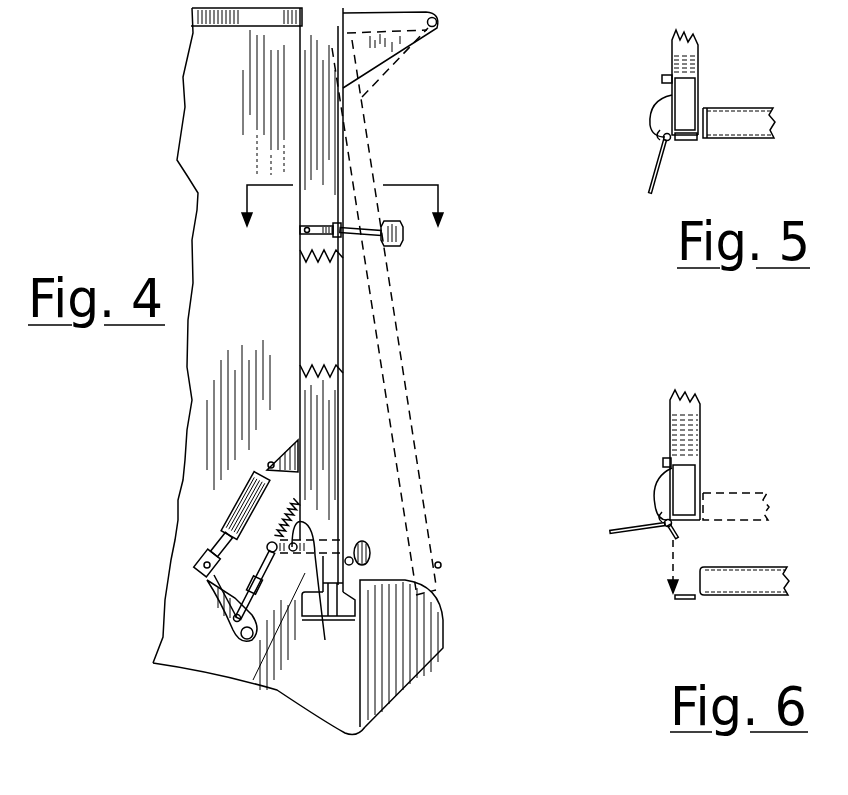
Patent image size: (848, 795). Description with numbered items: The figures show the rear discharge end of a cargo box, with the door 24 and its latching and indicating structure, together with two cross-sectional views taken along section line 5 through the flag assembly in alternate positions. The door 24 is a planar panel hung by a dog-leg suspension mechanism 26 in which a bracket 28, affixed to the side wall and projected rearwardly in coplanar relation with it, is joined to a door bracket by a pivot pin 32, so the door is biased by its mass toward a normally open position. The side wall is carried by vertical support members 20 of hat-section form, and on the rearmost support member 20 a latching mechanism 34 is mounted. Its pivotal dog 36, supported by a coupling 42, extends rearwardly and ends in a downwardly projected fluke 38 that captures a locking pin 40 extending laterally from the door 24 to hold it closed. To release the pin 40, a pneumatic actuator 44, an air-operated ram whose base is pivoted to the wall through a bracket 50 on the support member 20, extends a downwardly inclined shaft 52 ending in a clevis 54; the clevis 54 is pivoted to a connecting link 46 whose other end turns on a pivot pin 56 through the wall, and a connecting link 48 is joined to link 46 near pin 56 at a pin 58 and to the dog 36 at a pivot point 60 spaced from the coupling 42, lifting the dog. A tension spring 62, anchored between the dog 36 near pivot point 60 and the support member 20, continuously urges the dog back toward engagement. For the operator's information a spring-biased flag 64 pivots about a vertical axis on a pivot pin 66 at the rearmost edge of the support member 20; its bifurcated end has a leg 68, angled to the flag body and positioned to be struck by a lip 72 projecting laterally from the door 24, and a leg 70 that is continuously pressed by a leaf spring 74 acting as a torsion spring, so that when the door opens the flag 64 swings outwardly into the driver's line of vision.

In FIG. 4, the section line 5— 5 is at (341, 220).
In FIG. 4, the vertical support member 20 is at (327, 440).
In FIG. 5, the vertical support member 20 is at (672, 120).
In FIG. 6, the vertical support member 20 is at (681, 455).
In FIG. 4, the door 24 is at (405, 430).
In FIG. 5, the door 24 is at (747, 140).
In FIG. 6, the door 24 is at (753, 500).
In FIG. 4, the suspension mechanism 26 is at (470, 27).
In FIG. 4, the bracket 28 is at (380, 57).
In FIG. 4, the pivot pin 32 is at (435, 27).
In FIG. 4, the latching mechanism 34 is at (140, 490).
In FIG. 4, the pivotal dog 36 is at (345, 562).
In FIG. 4, the fluke 38 is at (388, 560).
In FIG. 4, the locking pin 40 is at (350, 568).
In FIG. 4, the coupling 42 is at (302, 560).
In FIG. 4, the pneumatic actuator 44 is at (243, 510).
In FIG. 4, the connecting link 46 is at (222, 603).
In FIG. 4, the connecting link 48 is at (233, 614).
In FIG. 4, the bracket 50 is at (283, 440).
In FIG. 4, the shaft 52 is at (220, 537).
In FIG. 4, the clevis 54 is at (200, 553).
In FIG. 4, the pivot pin 56 is at (245, 639).
In FIG. 4, the link pin 58 is at (236, 621).
In FIG. 4, the pivot point 60 is at (269, 553).
In FIG. 4, the tension spring 62 is at (293, 517).
In FIG. 4, the spring-biased flag 64 is at (393, 250).
In FIG. 5, the spring-biased flag 64 is at (657, 177).
In FIG. 6, the spring-biased flag 64 is at (618, 528).
In FIG. 4, the pivot pin 66 is at (341, 229).
In FIG. 5, the pivot pin 66 is at (668, 141).
In FIG. 6, the pivot pin 66 is at (662, 525).
In FIG. 6, the leg 68 is at (670, 533).
In FIG. 5, the leg 70 is at (657, 140).
In FIG. 6, the leg 70 is at (663, 517).
In FIG. 5, the lip 72 is at (687, 143).
In FIG. 6, the lip 72 is at (680, 599).
In FIG. 4, the leaf spring 74 is at (323, 229).
In FIG. 5, the leaf spring 74 is at (652, 113).
In FIG. 6, the leaf spring 74 is at (658, 487).